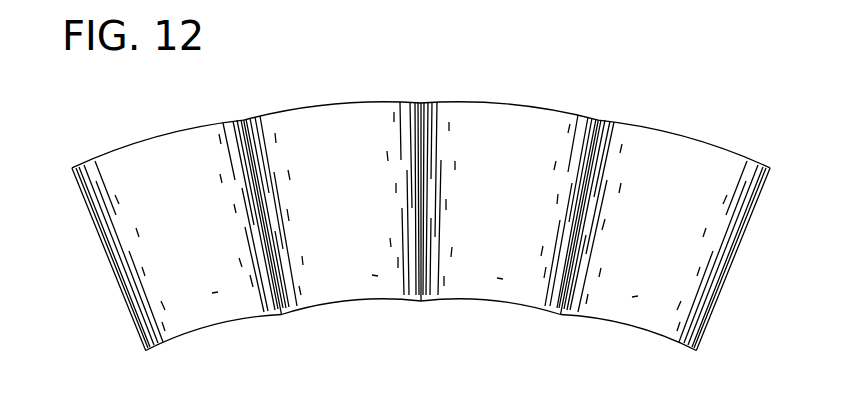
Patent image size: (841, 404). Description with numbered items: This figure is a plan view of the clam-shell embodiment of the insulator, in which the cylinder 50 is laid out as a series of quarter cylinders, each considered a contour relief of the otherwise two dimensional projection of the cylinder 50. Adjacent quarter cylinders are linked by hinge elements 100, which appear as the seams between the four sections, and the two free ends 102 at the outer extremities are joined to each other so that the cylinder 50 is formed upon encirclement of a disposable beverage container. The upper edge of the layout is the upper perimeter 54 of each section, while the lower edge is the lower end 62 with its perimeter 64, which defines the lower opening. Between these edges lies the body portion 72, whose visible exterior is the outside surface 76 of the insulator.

The cylinder 50 is at (225, 101).
The upper perimeter 54 is at (421, 211).
The lower end 62 is at (473, 288).
The perimeter 64 is at (421, 331).
The body portion 72 is at (212, 293).
The outside surface 76 is at (342, 120).
The hinge elements 100 is at (262, 209).
The ends 102 is at (107, 258).